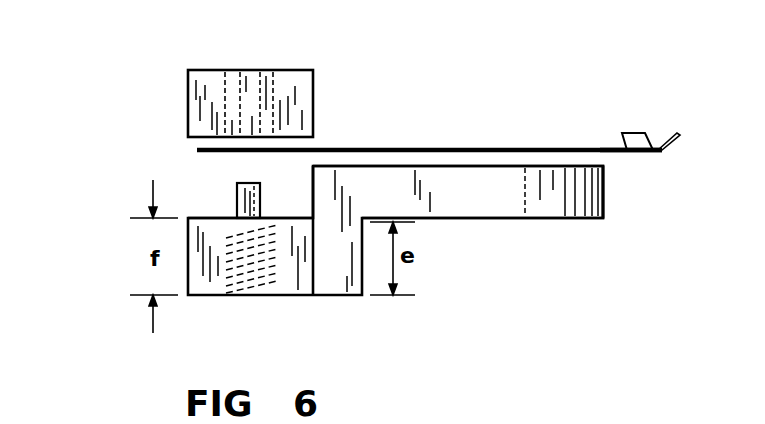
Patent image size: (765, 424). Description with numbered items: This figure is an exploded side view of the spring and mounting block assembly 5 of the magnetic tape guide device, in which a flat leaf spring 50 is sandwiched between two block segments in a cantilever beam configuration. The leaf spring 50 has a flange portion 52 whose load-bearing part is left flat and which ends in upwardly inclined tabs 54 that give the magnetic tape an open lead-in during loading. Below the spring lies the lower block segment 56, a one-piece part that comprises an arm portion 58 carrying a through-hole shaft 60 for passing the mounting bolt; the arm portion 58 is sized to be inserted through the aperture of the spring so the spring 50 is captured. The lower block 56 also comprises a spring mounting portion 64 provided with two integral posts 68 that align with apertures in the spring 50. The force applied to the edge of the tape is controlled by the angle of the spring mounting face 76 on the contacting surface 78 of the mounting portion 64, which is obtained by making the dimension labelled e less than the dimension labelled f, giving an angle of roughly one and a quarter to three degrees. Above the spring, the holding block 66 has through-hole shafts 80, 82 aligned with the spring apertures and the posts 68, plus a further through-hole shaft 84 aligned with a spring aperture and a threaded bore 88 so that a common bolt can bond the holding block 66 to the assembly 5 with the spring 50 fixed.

The mounting block assembly 5 is at (80, 62).
The leaf spring 50 is at (421, 148).
The flange portion 52 is at (618, 153).
The upwardly inclined tabs 54 is at (634, 138).
The lower block segment 56 is at (612, 232).
The arm portion 58 is at (487, 200).
The through-hole shaft 60 is at (556, 207).
The spring mounting portion 64 is at (292, 282).
The holding block 66 is at (303, 85).
The integral posts 68 is at (245, 182).
The spring mounting face 76 is at (267, 154).
The contacting surface 78 is at (203, 214).
The through-hole shaft 80 is at (248, 72).
The through-hole shaft 82 is at (248, 72).
The through-hole shaft 84 is at (268, 72).
The threaded bore 88 is at (252, 292).